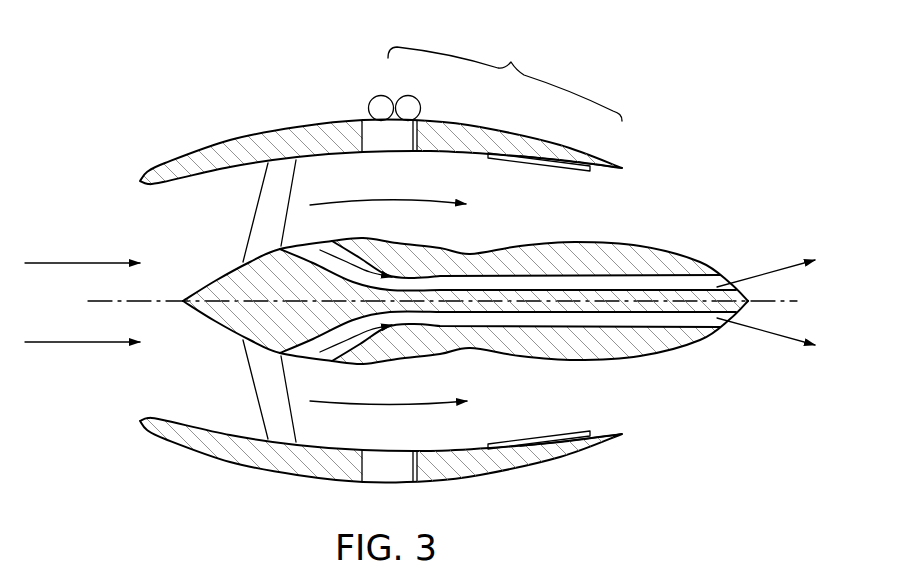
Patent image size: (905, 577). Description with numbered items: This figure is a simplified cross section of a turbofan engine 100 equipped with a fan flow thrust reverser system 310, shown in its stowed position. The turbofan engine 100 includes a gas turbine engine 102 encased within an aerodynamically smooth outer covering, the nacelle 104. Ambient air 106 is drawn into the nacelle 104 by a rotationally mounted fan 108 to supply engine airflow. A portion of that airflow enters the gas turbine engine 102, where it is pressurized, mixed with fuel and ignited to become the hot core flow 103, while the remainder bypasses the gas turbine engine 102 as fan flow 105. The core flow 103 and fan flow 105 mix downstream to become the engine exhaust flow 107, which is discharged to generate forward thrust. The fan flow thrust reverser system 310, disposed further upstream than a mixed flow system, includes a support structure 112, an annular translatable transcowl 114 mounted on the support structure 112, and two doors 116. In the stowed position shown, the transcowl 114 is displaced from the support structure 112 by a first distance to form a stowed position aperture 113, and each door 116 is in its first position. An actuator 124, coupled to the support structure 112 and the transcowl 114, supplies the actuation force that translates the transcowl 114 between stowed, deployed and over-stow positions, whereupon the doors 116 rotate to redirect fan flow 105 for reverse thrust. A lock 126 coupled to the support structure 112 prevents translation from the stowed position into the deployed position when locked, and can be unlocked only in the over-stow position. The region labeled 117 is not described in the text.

The turbofan engine 100 is at (211, 86).
The gas turbine engine 102 is at (642, 246).
The core flow 103 is at (363, 268).
The nacelle 104 is at (181, 157).
The fan flow 105 is at (399, 199).
The ambient air 106 is at (88, 262).
The engine exhaust flow 107 is at (786, 267).
The fan 108 is at (277, 173).
The support structure 112 is at (363, 120).
The stowed position aperture 113 is at (416, 482).
The transcowl 114 is at (500, 132).
The door 116 is at (540, 166).
The nacelle trailing surface 117 is at (547, 156).
The actuator 124 is at (381, 95).
The lock 126 is at (421, 108).
The fan flow thrust reverser system 310 is at (505, 77).